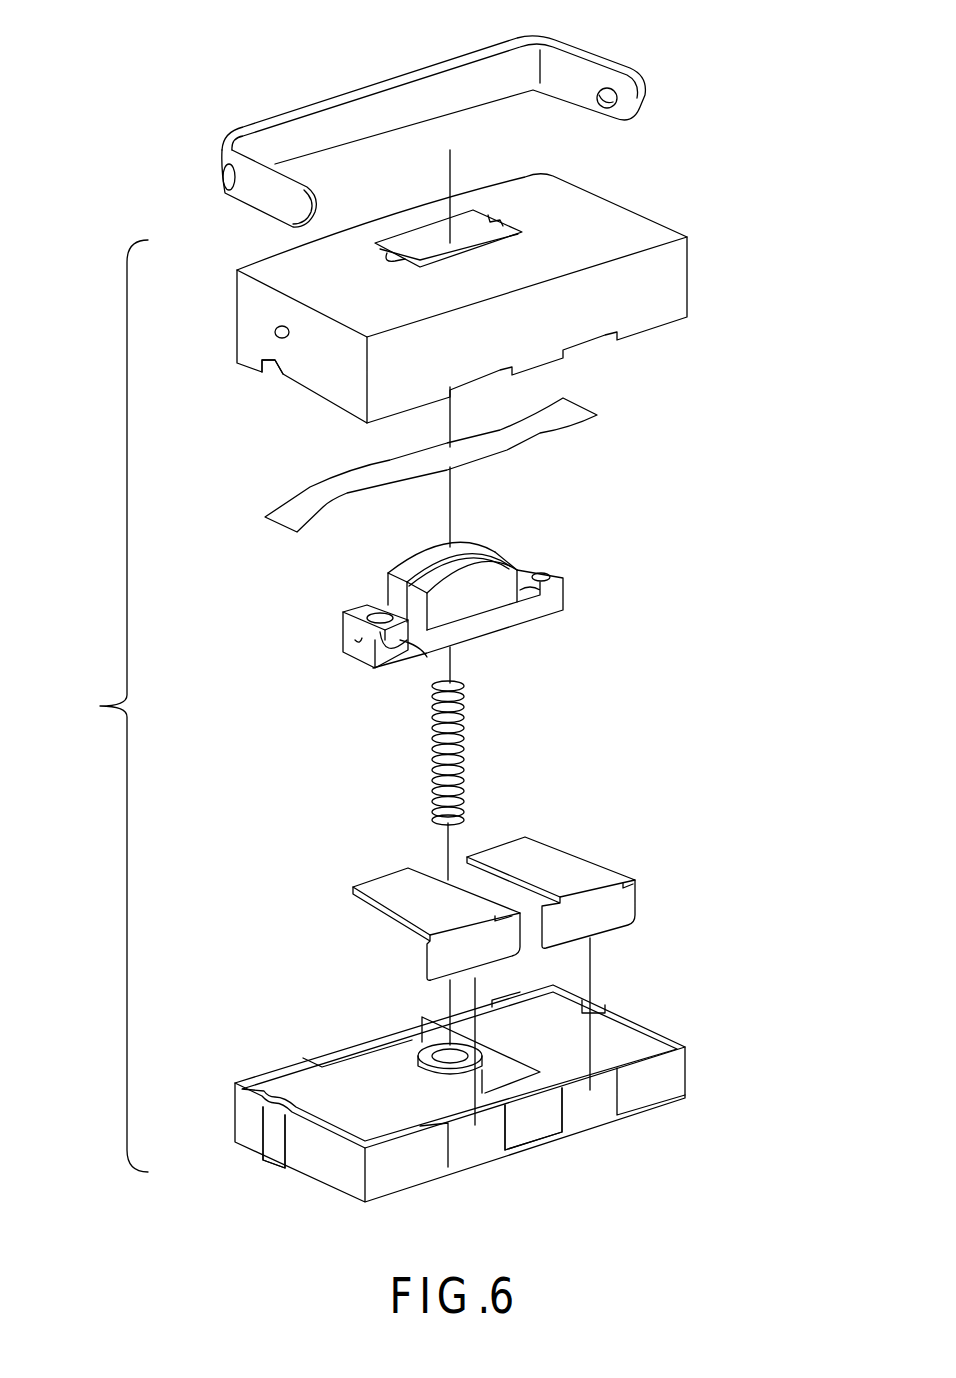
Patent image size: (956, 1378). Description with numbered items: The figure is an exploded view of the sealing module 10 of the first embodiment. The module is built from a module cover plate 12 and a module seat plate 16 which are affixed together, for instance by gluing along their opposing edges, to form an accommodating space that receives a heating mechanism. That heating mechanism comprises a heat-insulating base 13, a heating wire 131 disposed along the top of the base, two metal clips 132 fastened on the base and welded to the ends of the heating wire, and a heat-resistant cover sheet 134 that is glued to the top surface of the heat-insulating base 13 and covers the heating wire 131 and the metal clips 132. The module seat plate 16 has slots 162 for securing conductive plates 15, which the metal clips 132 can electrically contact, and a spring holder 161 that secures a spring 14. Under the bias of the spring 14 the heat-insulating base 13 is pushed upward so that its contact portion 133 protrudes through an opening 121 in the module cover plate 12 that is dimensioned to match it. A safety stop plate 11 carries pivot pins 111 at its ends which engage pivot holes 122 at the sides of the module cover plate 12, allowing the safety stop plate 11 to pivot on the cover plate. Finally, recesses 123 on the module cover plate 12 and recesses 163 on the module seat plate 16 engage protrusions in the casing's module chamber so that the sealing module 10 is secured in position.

The sealing module 10 is at (99, 706).
The safety stop plate 11 is at (413, 83).
The pivot pins 111 is at (605, 88).
The module cover plate 12 is at (268, 270).
The opening 121 is at (418, 237).
The pivot holes 122 is at (274, 332).
The recesses 123 is at (268, 370).
The heat-insulating base 13 is at (508, 618).
The heating wire 131 is at (478, 557).
The metal clips 132 is at (347, 637).
The contact portion 133 is at (413, 573).
The heat-resistant cover sheet 134 is at (307, 490).
The spring 14 is at (462, 748).
The conductive plates 15 is at (567, 862).
The module seat plate 16 is at (330, 1160).
The spring holder 161 is at (442, 1053).
The slots 162 is at (585, 1112).
The recesses 163 is at (275, 1143).